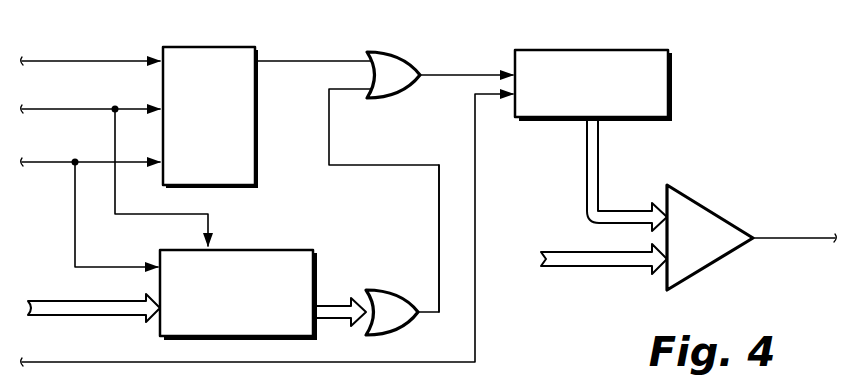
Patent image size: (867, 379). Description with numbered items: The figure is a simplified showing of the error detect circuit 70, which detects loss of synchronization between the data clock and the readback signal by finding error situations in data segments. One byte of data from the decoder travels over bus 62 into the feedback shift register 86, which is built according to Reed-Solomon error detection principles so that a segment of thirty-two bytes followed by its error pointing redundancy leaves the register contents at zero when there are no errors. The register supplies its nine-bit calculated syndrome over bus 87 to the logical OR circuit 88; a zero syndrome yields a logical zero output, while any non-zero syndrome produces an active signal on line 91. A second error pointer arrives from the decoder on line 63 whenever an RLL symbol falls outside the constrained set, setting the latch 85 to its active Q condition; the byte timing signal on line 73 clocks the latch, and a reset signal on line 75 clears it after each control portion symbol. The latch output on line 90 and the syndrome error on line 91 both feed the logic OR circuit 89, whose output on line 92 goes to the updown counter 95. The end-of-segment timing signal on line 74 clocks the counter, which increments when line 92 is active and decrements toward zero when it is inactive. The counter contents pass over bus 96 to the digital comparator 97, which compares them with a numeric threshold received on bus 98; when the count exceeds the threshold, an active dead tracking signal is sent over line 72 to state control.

The line 63 is at (76, 37).
The line 75 is at (80, 86).
The line 73 is at (75, 186).
The bus 62 is at (66, 284).
The line 74 is at (88, 344).
The latch 85 is at (216, 47).
The line 90 is at (316, 61).
The logic OR circuit 89 is at (412, 90).
The line 92 is at (460, 54).
The updown counter 95 is at (617, 50).
The bus 96 is at (586, 150).
The digital comparator 97 is at (736, 193).
The line 72 is at (790, 238).
The bus 98 is at (606, 267).
The feedback shift register 86 is at (290, 250).
The bus 87 is at (334, 300).
The logical OR circuit 88 is at (425, 268).
The line 91 is at (439, 170).
The error detect circuit 70 is at (337, 208).